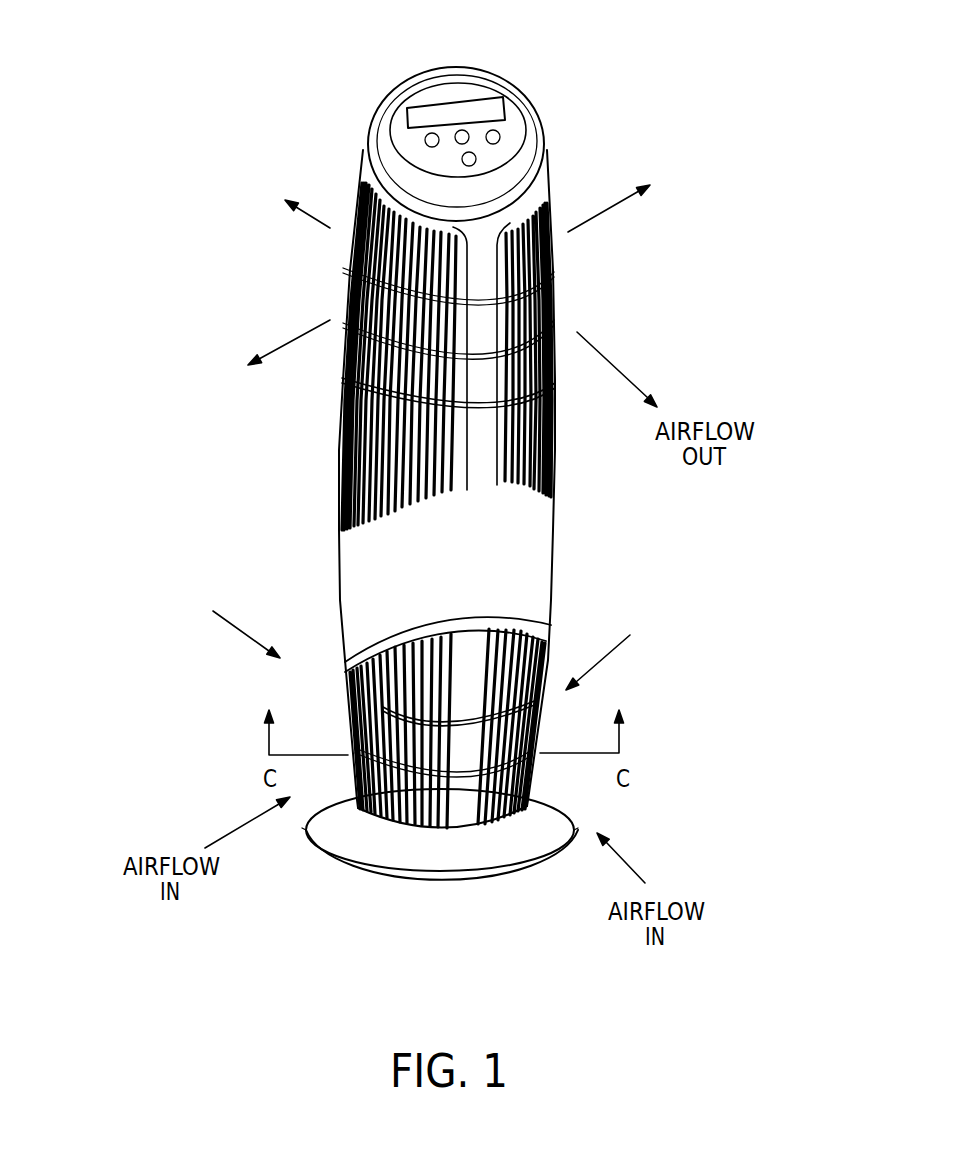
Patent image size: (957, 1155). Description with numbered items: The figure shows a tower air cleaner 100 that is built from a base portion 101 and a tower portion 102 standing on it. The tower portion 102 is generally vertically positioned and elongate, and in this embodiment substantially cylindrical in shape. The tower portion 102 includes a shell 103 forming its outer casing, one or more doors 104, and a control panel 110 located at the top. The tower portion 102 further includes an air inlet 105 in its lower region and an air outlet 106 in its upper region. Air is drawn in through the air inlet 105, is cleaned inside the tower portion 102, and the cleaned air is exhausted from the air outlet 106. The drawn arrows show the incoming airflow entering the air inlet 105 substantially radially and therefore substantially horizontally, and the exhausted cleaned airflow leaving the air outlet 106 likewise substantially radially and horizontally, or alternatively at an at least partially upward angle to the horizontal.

The tower air cleaner 100 is at (444, 508).
The base portion 101 is at (320, 858).
The tower portion 102 is at (76, 69).
The shell 103 is at (338, 450).
The door 104 is at (543, 557).
The air inlet 105 is at (700, 634).
The air outlet 106 is at (703, 168).
The control panel 110 is at (480, 93).